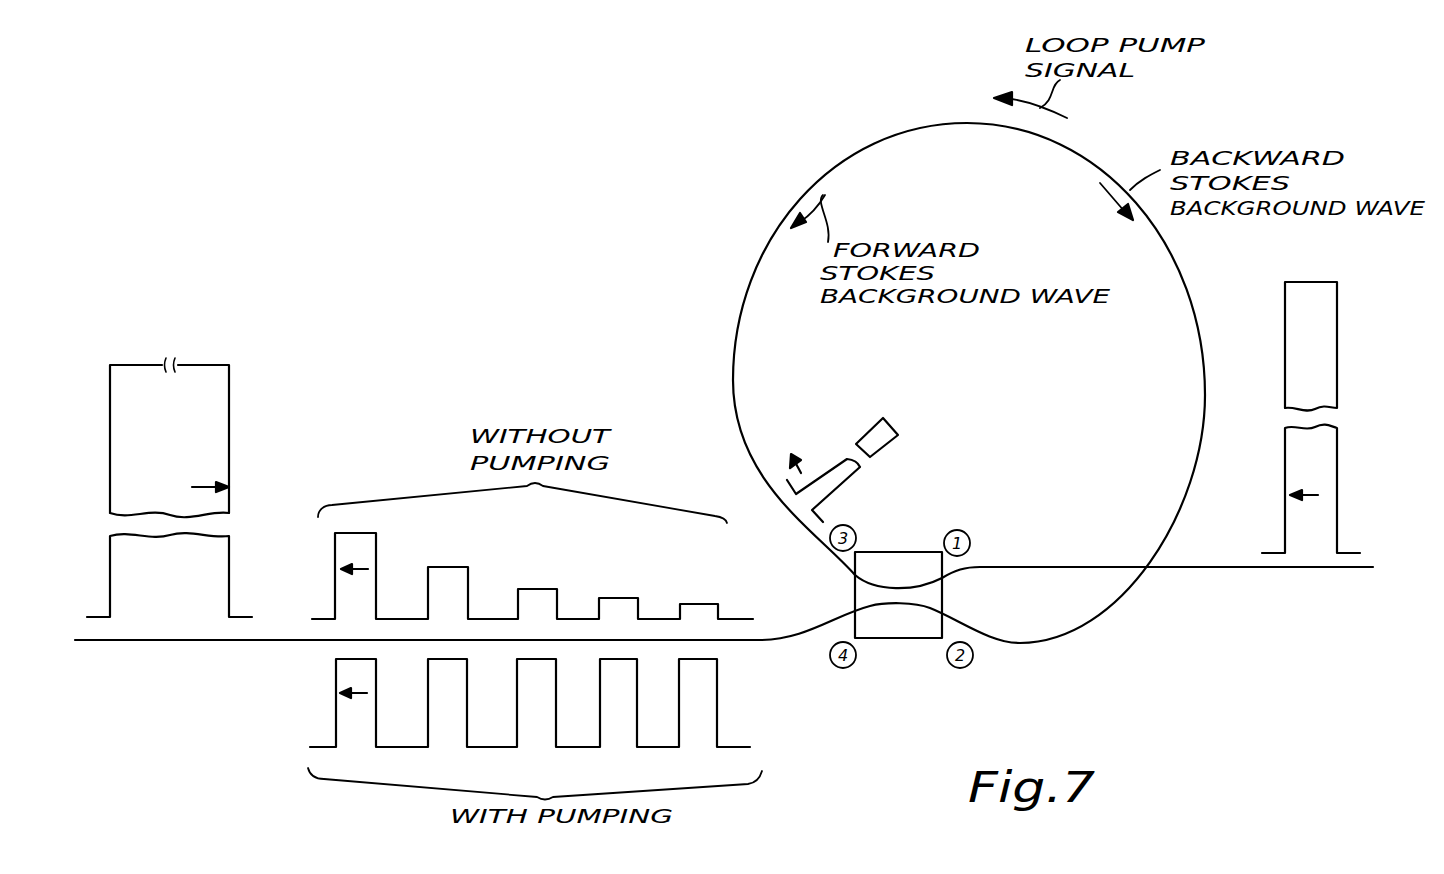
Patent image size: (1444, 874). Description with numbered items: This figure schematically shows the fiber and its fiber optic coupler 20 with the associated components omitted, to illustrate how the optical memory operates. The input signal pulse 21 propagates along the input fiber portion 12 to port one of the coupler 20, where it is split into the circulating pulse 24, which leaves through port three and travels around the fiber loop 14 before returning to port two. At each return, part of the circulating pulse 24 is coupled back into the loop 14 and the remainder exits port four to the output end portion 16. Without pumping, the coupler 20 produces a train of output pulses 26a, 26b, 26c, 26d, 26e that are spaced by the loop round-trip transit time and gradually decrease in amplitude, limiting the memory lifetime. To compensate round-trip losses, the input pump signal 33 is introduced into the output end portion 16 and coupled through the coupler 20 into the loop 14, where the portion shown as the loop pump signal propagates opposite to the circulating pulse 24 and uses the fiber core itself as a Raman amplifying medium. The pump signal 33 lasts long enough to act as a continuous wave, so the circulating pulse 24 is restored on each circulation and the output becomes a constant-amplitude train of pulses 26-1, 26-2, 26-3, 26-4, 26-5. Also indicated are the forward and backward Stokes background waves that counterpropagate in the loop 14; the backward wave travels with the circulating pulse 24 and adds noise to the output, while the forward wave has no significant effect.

The input fiber portion 12 is at (1303, 572).
The fiber loop 14 is at (1105, 618).
The output end portion 16 is at (773, 643).
The fiber optic coupler 20 is at (913, 552).
The input signal pulse 21 is at (1337, 448).
The circulating pulse 24 is at (840, 490).
The first output pulse 26a is at (376, 540).
The second output pulse 26b is at (470, 577).
The third output pulse 26c is at (557, 589).
The fourth output pulse 26d is at (638, 598).
The fifth output pulse 26e is at (718, 604).
The constant amplitude output pulse 26-1 is at (337, 710).
The constant amplitude output pulse 26-2 is at (428, 722).
The constant amplitude output pulse 26-3 is at (517, 725).
The constant amplitude output pulse 26-4 is at (637, 725).
The constant amplitude output pulse 26-5 is at (717, 710).
The input pump signal 33 is at (229, 418).